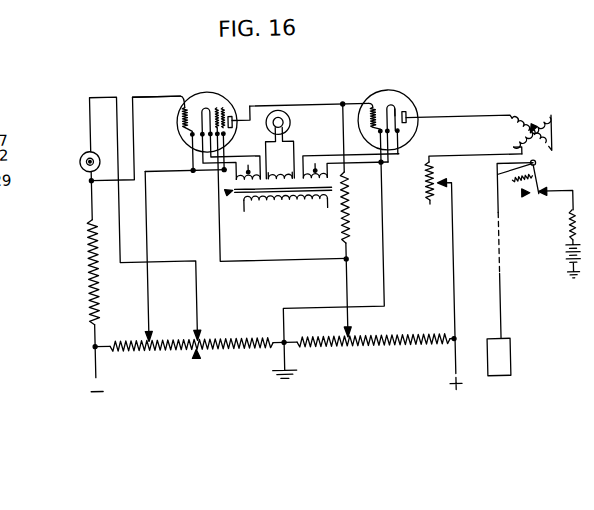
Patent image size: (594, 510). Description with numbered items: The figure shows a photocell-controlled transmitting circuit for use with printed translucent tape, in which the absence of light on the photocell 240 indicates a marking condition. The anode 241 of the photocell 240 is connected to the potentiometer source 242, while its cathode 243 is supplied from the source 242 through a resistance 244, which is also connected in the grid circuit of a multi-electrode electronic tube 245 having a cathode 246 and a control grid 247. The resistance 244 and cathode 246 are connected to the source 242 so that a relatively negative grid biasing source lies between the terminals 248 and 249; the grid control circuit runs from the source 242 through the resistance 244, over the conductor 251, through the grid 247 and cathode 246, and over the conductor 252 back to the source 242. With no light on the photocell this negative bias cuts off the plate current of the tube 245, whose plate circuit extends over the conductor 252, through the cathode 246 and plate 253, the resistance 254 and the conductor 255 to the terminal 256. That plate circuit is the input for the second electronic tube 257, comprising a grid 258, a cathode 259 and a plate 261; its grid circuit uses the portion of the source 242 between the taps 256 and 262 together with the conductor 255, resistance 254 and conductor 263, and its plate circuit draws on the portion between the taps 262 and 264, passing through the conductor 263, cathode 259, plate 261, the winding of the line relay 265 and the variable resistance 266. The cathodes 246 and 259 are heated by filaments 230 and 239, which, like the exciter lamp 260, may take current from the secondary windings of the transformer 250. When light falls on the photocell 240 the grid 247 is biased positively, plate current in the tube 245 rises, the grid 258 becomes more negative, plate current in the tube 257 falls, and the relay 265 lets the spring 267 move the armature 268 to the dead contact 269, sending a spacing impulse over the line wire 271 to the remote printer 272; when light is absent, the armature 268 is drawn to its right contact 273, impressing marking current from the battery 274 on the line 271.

The filament 230 is at (223, 106).
The filament 239 is at (398, 109).
The photocell 240 is at (82, 156).
The anode of photocell 241 is at (90, 152).
The source 242 is at (194, 355).
The cathode of photocell 243 is at (82, 163).
The resistance 244 is at (88, 255).
The multi-electrode electronic tube 245 is at (190, 104).
The cathode 246 is at (208, 106).
The control grid 247 is at (188, 110).
The terminal 248 is at (93, 341).
The terminal 249 is at (148, 326).
The transformer 250 is at (230, 190).
The conductor 251 is at (137, 93).
The conductor 252 is at (150, 281).
The plate 253 is at (235, 114).
The resistance 254 is at (342, 224).
The conductor 255 is at (344, 273).
The terminal 256 is at (344, 338).
The second electronic tube 257 is at (409, 114).
The grid 258 is at (376, 110).
The cathode 259 is at (389, 108).
The exciter lamp 260 is at (295, 105).
The plate 261 is at (412, 120).
The terminal 262 is at (281, 339).
The conductor 263 is at (326, 307).
The terminal 264 is at (446, 340).
The line relay 265 is at (536, 131).
The variable resistance 266 is at (431, 206).
The spring 267 is at (514, 185).
The armature 268 is at (499, 176).
The dead contact 269 is at (523, 198).
The line wire 271 is at (497, 283).
The remote printer 272 is at (508, 368).
The right contact 273 is at (554, 197).
The battery 274 is at (568, 262).